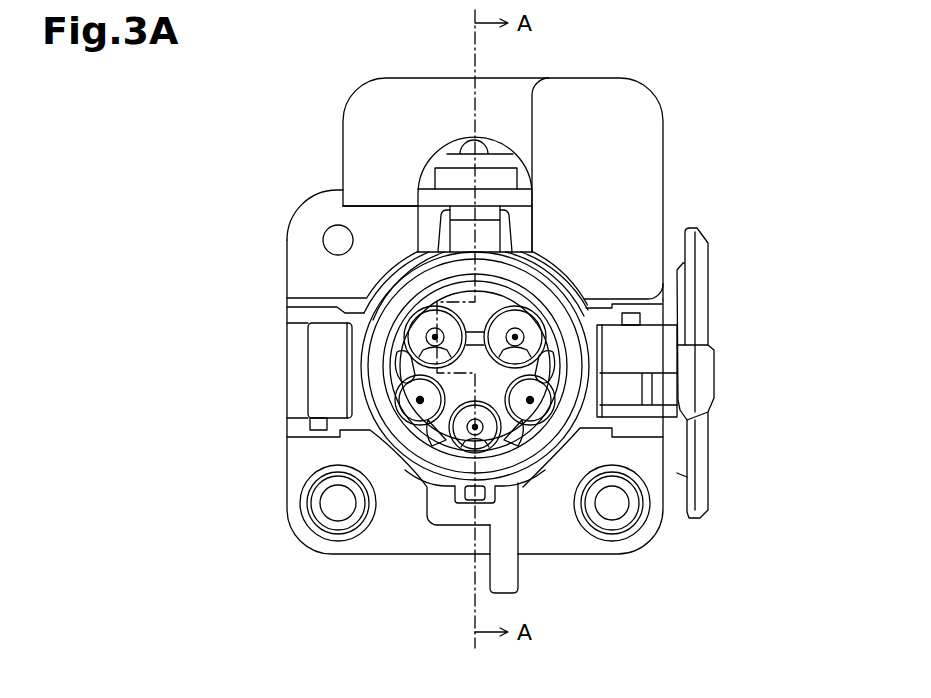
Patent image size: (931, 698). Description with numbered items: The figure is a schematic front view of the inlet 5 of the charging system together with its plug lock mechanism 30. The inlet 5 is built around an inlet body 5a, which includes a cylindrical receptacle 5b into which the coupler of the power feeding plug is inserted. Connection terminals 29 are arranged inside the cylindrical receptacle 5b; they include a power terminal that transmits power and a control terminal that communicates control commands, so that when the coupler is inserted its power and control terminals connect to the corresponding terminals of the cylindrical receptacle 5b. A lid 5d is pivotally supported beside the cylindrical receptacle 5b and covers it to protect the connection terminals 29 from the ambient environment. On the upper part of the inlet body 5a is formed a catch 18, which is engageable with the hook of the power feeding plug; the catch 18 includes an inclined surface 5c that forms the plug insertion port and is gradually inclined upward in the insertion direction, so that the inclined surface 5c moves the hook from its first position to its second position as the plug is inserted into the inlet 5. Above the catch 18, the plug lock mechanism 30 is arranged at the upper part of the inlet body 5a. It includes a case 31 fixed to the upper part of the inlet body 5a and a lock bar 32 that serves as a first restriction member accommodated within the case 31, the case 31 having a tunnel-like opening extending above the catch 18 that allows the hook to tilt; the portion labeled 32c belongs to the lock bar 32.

The inlet 5 is at (789, 108).
The inlet body 5a is at (393, 555).
The cylindrical receptacle 5b is at (532, 468).
The inclined surface 5c is at (497, 236).
The lid 5d is at (713, 381).
The catch 18 is at (494, 213).
The connection terminals 29 is at (420, 400).
The plug lock mechanism 30 is at (678, 72).
The case 31 is at (620, 78).
The lock bar 32 is at (505, 160).
The engaging piece of lid 32c is at (450, 178).